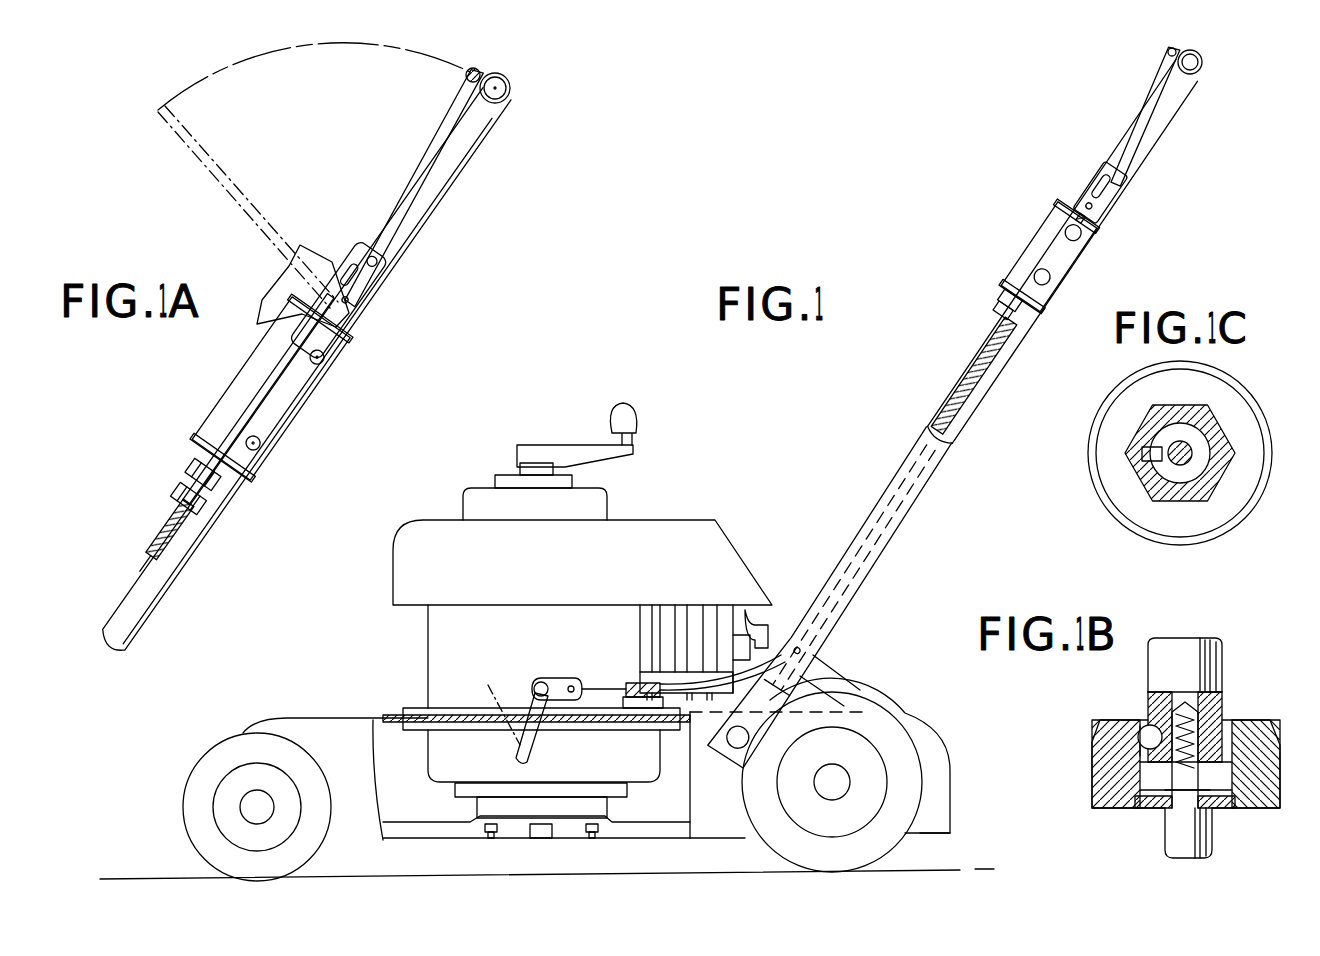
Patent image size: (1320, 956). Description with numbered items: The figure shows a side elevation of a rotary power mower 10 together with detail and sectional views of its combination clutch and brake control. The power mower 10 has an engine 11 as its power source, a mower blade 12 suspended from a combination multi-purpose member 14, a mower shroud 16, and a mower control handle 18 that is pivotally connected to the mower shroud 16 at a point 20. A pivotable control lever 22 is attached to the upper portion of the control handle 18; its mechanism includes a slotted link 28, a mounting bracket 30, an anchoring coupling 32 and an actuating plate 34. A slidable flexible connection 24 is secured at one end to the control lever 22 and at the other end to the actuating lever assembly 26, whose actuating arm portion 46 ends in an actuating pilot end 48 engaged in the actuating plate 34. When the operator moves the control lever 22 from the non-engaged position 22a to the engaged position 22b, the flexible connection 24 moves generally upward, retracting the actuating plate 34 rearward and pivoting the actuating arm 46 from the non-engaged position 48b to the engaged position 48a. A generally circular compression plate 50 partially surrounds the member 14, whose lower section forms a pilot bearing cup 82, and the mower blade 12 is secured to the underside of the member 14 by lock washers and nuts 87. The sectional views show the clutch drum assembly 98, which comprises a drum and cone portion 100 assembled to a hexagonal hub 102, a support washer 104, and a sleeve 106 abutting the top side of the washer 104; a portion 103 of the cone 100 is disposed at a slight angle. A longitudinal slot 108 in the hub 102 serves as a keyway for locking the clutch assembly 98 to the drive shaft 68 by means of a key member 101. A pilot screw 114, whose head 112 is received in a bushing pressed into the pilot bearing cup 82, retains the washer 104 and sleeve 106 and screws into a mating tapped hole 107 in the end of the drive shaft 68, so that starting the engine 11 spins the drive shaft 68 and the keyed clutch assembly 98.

In FIG. 1, the power mower 10 is at (712, 512).
In FIG. 1, the engine 11 is at (728, 612).
In FIG. 1, the mower blade 12 is at (640, 838).
In FIG. 1, the combination multi-purpose member 14 is at (474, 806).
In FIG. 1, the mower shroud 16 is at (905, 712).
In FIG. 1A, the mower control handle 18 is at (470, 167).
In FIG. 1, the mower control handle 18 is at (897, 480).
In FIG. 1, the pivot point 20 is at (742, 748).
In FIG. 1A, the pivotable control lever 22 is at (428, 152).
In FIG. 1, the pivotable control lever 22 is at (1160, 84).
In FIG. 1A, the non-engaged position 22a is at (152, 108).
In FIG. 1A, the engaged position 22b is at (471, 68).
In FIG. 1A, the slidable flexible connection 24 is at (285, 404).
In FIG. 1, the slidable flexible connection 24 is at (1058, 256).
In FIG. 1, the pivotable actuating lever assembly 26 is at (535, 755).
In FIG. 1A, the slotted link 28 is at (372, 296).
In FIG. 1, the slotted link 28 is at (1120, 194).
In FIG. 1A, the mounting bracket 30 is at (226, 391).
In FIG. 1, the mounting bracket 30 is at (1045, 228).
In FIG. 1A, the anchoring coupling 32 is at (233, 498).
In FIG. 1, the anchoring coupling 32 is at (1000, 306).
In FIG. 1, the actuating plate 34 is at (570, 680).
In FIG. 1, the actuating arm portion 46 is at (538, 733).
In FIG. 1, the actuating pilot end 48 is at (538, 684).
In FIG. 1, the engaged position 48a is at (538, 680).
In FIG. 1, the non-engaged position 48b is at (497, 687).
In FIG. 1, the compression plate 50 is at (612, 787).
In FIG. 1C, the drive shaft 68 is at (1190, 430).
In FIG. 1B, the drive shaft 68 is at (1205, 660).
In FIG. 1, the pilot bearing cup 82 is at (541, 838).
In FIG. 1, the nuts 87 is at (490, 840).
In FIG. 1C, the clutch drum assembly 98 is at (1094, 406).
In FIG. 1B, the clutch drum assembly 98 is at (1088, 800).
In FIG. 1C, the drum and cone portion 100 is at (1100, 465).
In FIG. 1B, the drum and cone portion 100 is at (1110, 765).
In FIG. 1C, the key member 101 is at (1152, 468).
In FIG. 1B, the key member 101 is at (1147, 742).
In FIG. 1C, the hexagonal hub 102 is at (1215, 440).
In FIG. 1B, the hexagonal hub 102 is at (1195, 715).
In FIG. 1C, the angled portion of the cone 103 is at (1097, 440).
In FIG. 1B, the angled portion of the cone 103 is at (1094, 733).
In FIG. 1B, the support washer 104 is at (1150, 802).
In FIG. 1B, the sleeve 106 is at (1175, 812).
In FIG. 1B, the tapped hole 107 is at (1196, 745).
In FIG. 1C, the longitudinal slot 108 is at (1145, 458).
In FIG. 1B, the longitudinal slot 108 is at (1140, 740).
In FIG. 1B, the pilot screw head 112 is at (1205, 845).
In FIG. 1C, the pilot screw 114 is at (1205, 478).
In FIG. 1B, the pilot screw 114 is at (1200, 792).